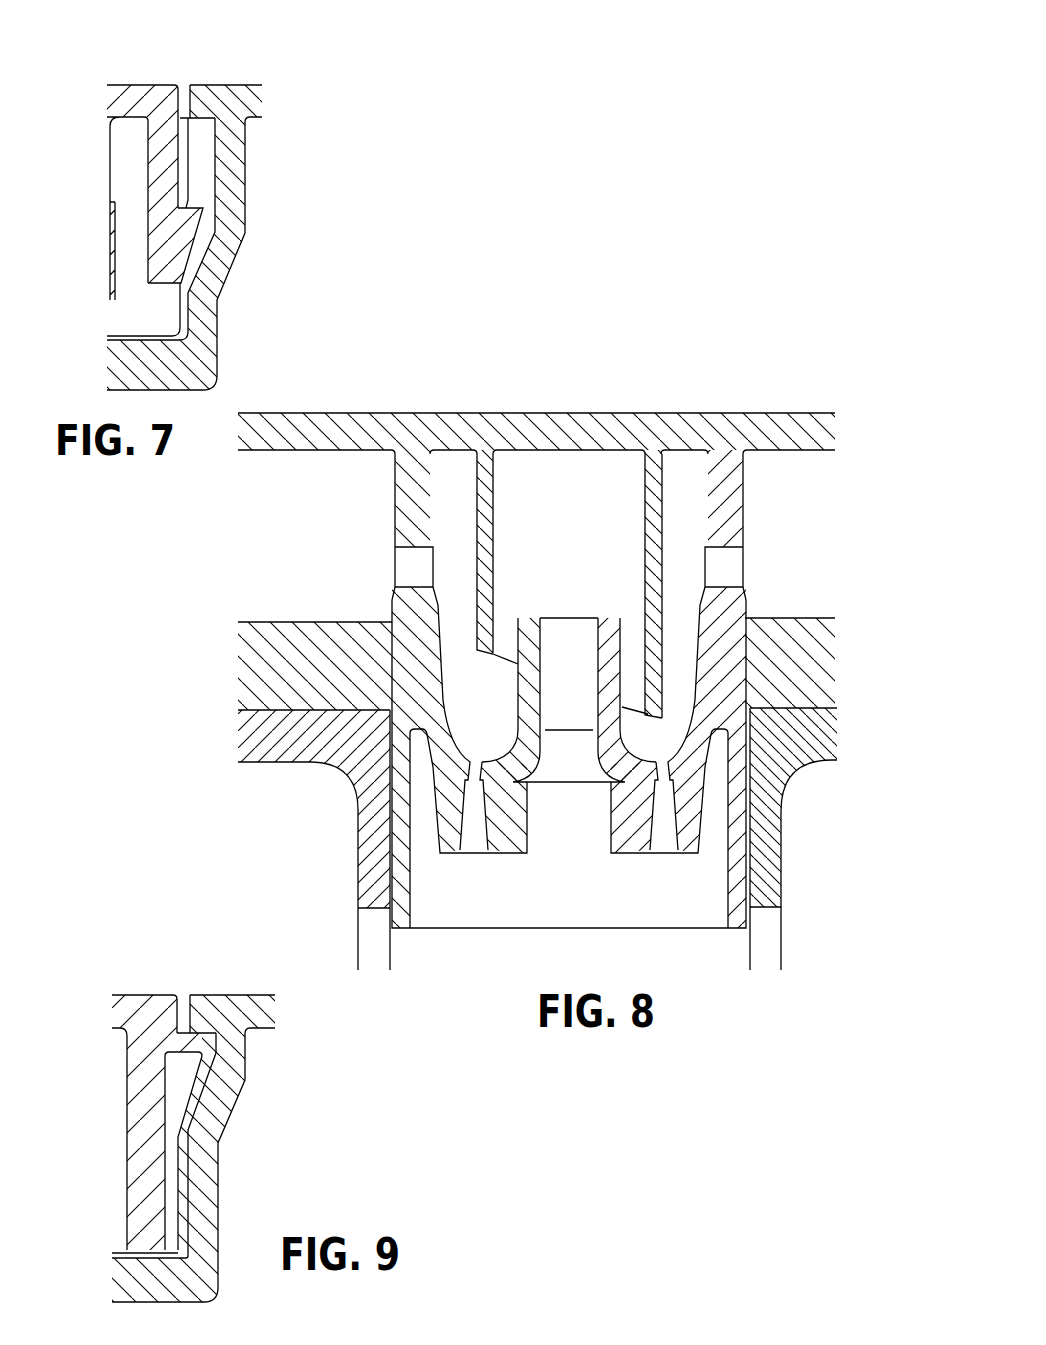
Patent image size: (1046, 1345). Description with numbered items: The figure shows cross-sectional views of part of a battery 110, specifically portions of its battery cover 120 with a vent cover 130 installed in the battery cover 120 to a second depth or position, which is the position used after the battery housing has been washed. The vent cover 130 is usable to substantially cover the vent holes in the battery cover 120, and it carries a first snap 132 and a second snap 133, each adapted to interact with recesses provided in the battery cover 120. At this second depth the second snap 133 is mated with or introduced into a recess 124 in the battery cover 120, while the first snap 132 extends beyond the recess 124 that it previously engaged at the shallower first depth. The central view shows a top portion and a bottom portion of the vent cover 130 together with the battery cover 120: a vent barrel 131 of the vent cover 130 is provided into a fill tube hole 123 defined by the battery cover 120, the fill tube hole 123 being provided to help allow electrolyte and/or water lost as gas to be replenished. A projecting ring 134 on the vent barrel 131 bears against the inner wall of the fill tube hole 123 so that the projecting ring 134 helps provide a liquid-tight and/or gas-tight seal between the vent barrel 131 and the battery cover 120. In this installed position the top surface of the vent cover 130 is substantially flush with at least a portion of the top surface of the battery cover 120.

In FIG. 7, the battery 110 is at (89, 107).
In FIG. 9, the battery 110 is at (88, 1003).
In FIG. 7, the battery cover 120 is at (270, 101).
In FIG. 8, the battery cover 120 is at (571, 798).
In FIG. 9, the battery cover 120 is at (287, 1005).
In FIG. 8, the fill tube hole 123 is at (768, 950).
In FIG. 9, the recess 124 is at (207, 1030).
In FIG. 8, the vent cover 130 is at (489, 398).
In FIG. 8, the vent barrel 131 is at (578, 477).
In FIG. 7, the first snap 132 is at (202, 218).
In FIG. 7, the second snap 133 is at (180, 163).
In FIG. 9, the second snap 133 is at (195, 1040).
In FIG. 8, the projecting ring 134 is at (785, 826).